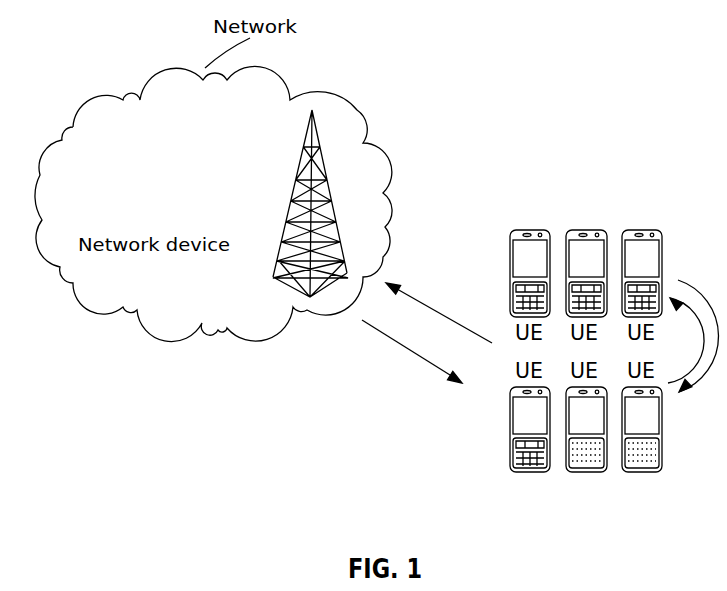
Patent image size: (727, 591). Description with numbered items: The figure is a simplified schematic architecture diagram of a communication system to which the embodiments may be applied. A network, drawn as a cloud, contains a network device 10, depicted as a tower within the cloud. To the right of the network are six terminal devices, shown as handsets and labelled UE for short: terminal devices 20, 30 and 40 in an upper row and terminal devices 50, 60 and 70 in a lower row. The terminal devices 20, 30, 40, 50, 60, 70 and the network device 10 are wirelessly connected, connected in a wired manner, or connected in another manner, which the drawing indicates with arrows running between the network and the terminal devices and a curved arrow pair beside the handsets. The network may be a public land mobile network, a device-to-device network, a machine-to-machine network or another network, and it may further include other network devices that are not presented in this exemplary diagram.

The network device 10 is at (280, 228).
The terminal device 20 is at (528, 230).
The terminal device 30 is at (581, 230).
The terminal device 40 is at (641, 230).
The terminal device 50 is at (528, 473).
The terminal device 60 is at (585, 473).
The terminal device 70 is at (640, 473).